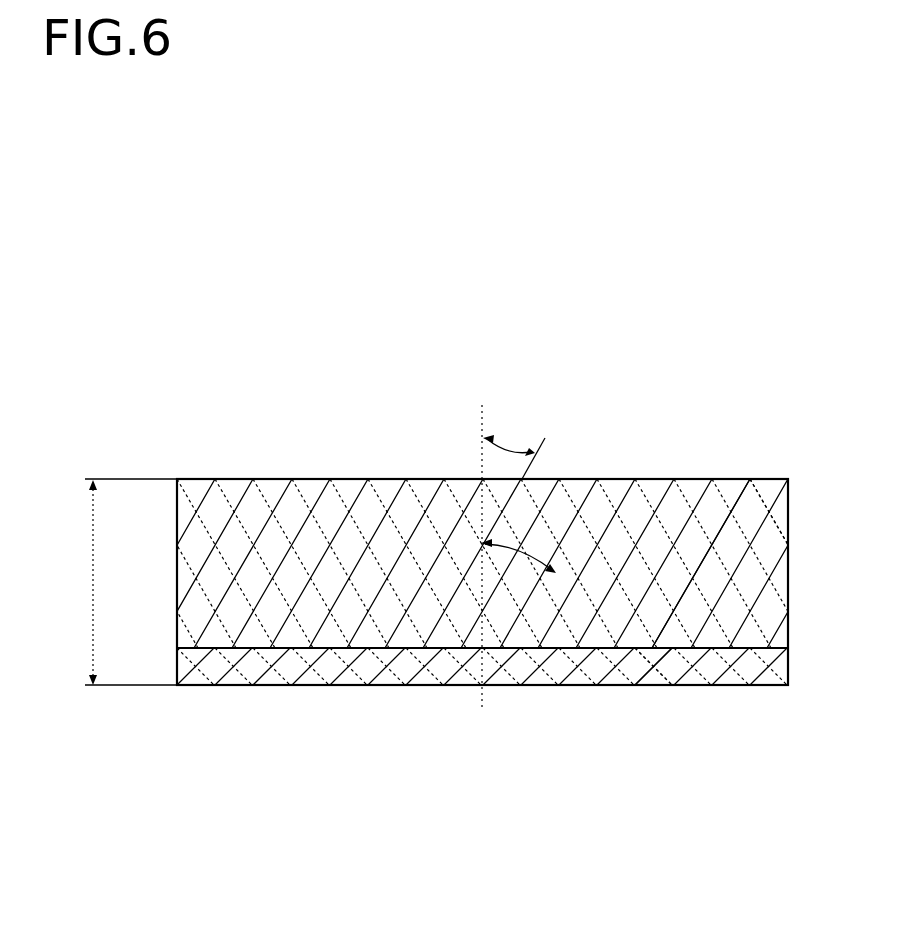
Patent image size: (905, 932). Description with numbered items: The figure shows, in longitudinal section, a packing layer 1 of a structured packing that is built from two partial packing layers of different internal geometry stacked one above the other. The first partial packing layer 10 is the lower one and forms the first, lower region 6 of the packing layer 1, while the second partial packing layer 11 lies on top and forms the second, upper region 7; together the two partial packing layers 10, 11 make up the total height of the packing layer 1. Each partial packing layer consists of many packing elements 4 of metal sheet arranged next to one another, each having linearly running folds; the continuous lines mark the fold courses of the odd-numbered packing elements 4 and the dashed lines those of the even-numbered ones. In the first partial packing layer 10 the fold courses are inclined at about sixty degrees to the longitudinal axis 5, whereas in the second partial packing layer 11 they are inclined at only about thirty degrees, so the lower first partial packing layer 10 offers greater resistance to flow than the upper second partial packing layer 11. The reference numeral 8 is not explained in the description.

The packing layer 1 is at (438, 438).
The packing element 4 is at (615, 478).
The longitudinal axis 5 is at (482, 408).
The lower region 6 is at (157, 652).
The upper region 7 is at (157, 483).
The reinforcing threads 8 is at (723, 478).
The first partial packing layer 10 is at (799, 663).
The second partial packing layer 11 is at (799, 540).